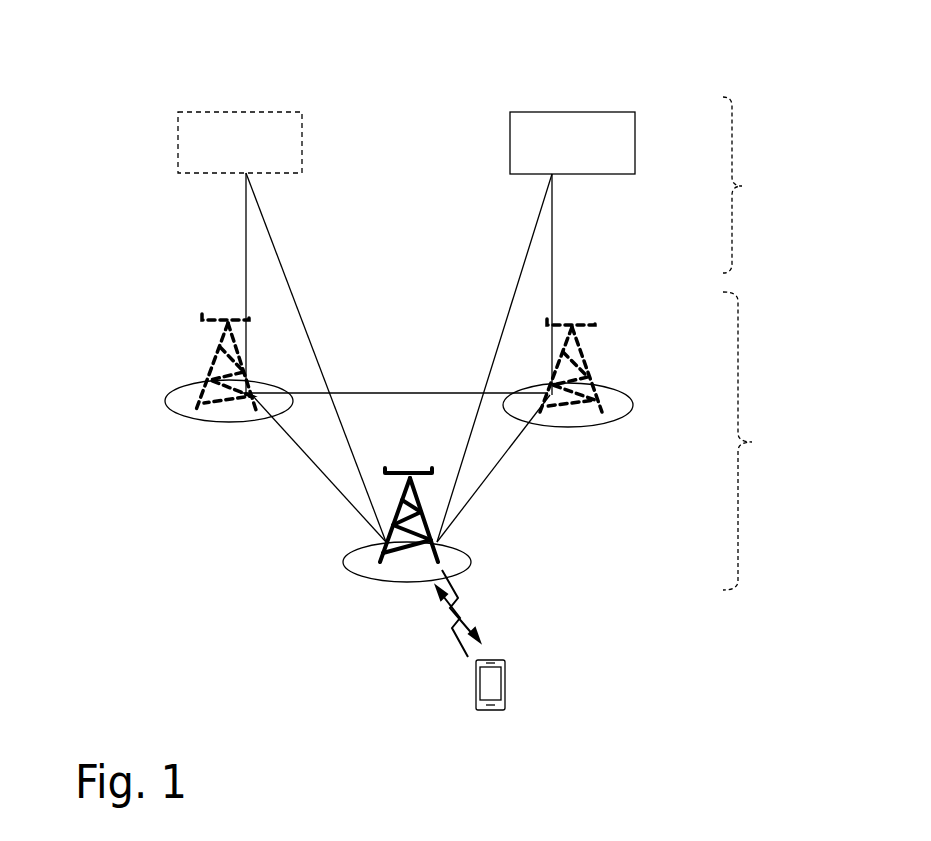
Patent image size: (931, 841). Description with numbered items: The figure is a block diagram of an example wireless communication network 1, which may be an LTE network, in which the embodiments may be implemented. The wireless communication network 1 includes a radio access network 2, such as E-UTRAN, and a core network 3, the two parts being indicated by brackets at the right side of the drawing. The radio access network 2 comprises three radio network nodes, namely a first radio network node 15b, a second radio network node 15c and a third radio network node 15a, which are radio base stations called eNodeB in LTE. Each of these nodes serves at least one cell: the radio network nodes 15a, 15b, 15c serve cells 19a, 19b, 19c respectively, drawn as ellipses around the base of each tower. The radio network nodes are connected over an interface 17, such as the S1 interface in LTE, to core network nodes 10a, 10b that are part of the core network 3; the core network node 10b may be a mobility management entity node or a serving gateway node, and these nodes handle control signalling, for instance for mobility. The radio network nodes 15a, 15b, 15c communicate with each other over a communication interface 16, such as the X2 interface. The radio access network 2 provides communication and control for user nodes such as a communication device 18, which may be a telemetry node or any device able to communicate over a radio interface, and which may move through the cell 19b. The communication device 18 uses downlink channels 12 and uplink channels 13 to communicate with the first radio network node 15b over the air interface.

The wireless communication network 1 is at (753, 40).
The radio access network 2 is at (753, 441).
The core network 3 is at (747, 185).
The core network node 10a is at (270, 157).
The core network node 10b is at (596, 157).
The downlink channels 12 is at (453, 583).
The uplink channels 13 is at (455, 640).
The third radio network node 15a is at (218, 370).
The first radio network node 15b is at (396, 562).
The second radio network node 15c is at (585, 362).
The communication interface 16 is at (384, 393).
The interface 17 is at (245, 262).
The communication device 18 is at (505, 675).
The cell 19a is at (166, 397).
The cell 19b is at (345, 558).
The cell 19c is at (633, 400).